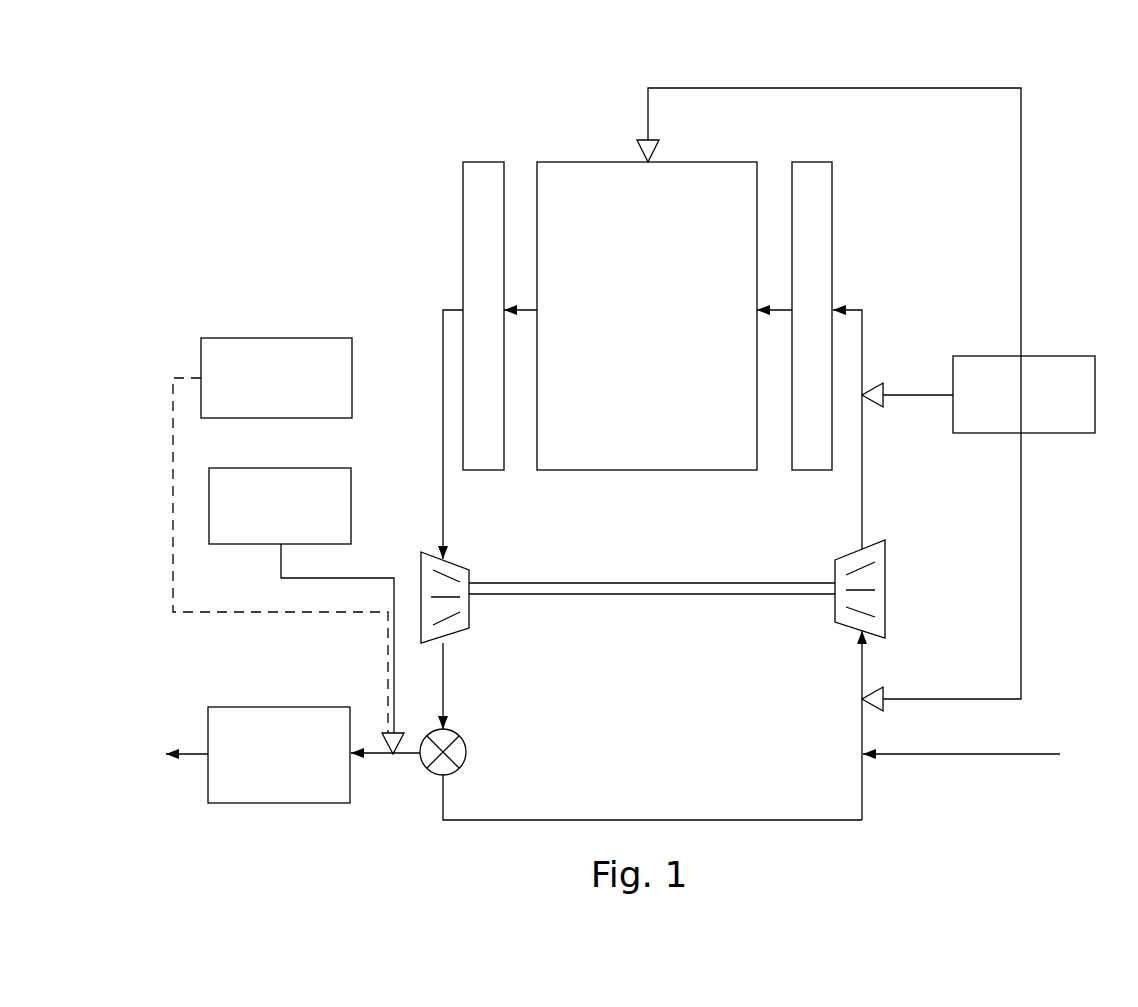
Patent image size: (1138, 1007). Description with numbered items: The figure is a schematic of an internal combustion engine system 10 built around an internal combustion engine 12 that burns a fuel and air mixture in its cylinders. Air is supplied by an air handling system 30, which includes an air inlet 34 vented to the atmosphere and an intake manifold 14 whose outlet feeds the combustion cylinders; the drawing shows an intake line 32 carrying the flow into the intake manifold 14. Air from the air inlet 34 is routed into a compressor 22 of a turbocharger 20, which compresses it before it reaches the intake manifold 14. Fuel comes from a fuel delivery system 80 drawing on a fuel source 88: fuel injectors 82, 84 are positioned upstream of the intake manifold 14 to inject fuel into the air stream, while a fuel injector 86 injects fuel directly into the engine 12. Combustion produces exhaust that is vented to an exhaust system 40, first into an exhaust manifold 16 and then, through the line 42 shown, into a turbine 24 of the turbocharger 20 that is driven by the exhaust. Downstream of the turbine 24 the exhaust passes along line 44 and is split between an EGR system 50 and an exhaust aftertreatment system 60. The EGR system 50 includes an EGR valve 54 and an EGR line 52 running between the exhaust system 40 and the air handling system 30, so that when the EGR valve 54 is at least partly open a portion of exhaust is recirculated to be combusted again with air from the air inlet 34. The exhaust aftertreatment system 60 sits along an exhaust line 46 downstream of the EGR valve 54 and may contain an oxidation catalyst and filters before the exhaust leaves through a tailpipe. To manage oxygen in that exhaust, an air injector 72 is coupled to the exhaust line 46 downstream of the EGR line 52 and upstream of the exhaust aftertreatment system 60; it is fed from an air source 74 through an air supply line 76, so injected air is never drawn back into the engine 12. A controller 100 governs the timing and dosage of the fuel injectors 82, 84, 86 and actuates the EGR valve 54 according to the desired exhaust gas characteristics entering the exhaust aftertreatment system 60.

The internal combustion engine system 10 is at (917, 66).
The internal combustion engine 12 is at (636, 222).
The intake manifold 14 is at (818, 162).
The exhaust manifold 16 is at (478, 162).
The turbocharger 20 is at (703, 684).
The compressor 22 is at (885, 582).
The turbine 24 is at (452, 562).
The air handling system 30 is at (953, 635).
The intake conduit 32 is at (862, 318).
The air inlet 34 is at (958, 756).
The exhaust system 40 is at (390, 275).
The exhaust conduit 42 is at (445, 383).
The exhaust conduit 44 is at (443, 675).
The exhaust line 46 is at (372, 756).
The EGR system 50 is at (420, 804).
The EGR line 52 is at (655, 820).
The EGR valve 54 is at (468, 750).
The exhaust aftertreatment system 60 is at (269, 798).
The air injector 72 is at (385, 735).
The air source 74 is at (269, 529).
The air supply line 76 is at (360, 578).
The fuel delivery system 80 is at (1070, 310).
The fuel injector 82 is at (880, 696).
The fuel injector 84 is at (877, 391).
The fuel injector 86 is at (652, 140).
The fuel source 88 is at (1013, 416).
The controller 100 is at (259, 401).